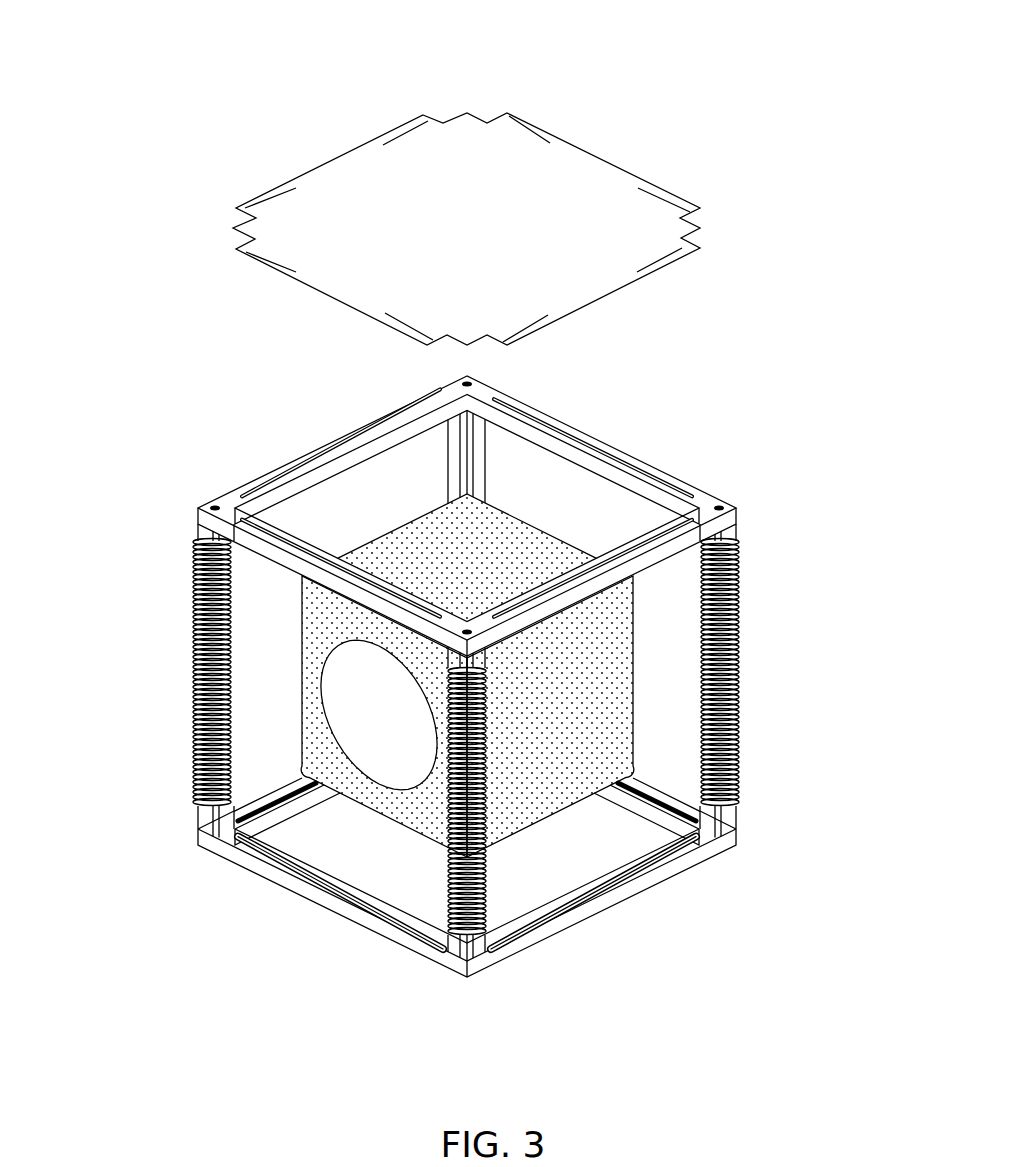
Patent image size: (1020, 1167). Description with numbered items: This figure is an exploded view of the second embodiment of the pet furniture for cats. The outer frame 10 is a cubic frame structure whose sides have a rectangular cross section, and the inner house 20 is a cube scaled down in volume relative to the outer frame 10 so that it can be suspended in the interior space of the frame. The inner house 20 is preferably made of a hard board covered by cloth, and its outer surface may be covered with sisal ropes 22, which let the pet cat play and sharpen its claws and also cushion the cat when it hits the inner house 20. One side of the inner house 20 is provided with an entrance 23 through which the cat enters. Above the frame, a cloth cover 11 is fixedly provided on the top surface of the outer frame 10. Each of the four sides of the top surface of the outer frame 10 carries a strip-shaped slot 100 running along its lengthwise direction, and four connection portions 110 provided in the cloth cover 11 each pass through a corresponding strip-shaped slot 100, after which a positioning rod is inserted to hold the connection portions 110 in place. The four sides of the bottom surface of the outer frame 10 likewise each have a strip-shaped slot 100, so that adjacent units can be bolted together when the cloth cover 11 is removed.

The connection portion 110 is at (355, 157).
The cloth cover 11 is at (540, 195).
The outer frame 10 is at (530, 632).
The strip-shaped slot 100 is at (600, 452).
The sisal rope 22 is at (195, 640).
The inner house 20 is at (495, 748).
The entrance 23 is at (380, 718).